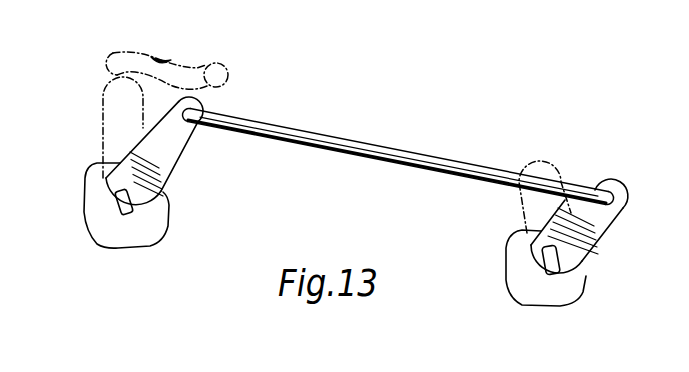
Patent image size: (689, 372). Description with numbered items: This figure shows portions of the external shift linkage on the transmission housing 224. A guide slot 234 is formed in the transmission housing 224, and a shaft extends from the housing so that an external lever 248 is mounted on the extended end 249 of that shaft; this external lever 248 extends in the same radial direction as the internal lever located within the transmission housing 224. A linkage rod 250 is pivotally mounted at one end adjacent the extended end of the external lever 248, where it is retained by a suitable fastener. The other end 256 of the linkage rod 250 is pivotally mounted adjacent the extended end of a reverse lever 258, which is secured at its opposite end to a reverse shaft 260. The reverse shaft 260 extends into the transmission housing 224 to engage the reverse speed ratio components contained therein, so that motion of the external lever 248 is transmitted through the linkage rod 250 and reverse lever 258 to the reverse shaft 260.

The transmission housing 224 is at (160, 209).
The guide slot 234 is at (169, 57).
The external lever 248 is at (168, 148).
The extended end 249 is at (123, 201).
The linkage rod 250 is at (320, 133).
The other end 256 is at (595, 189).
The reverse lever 258 is at (598, 222).
The reverse shaft 260 is at (557, 259).